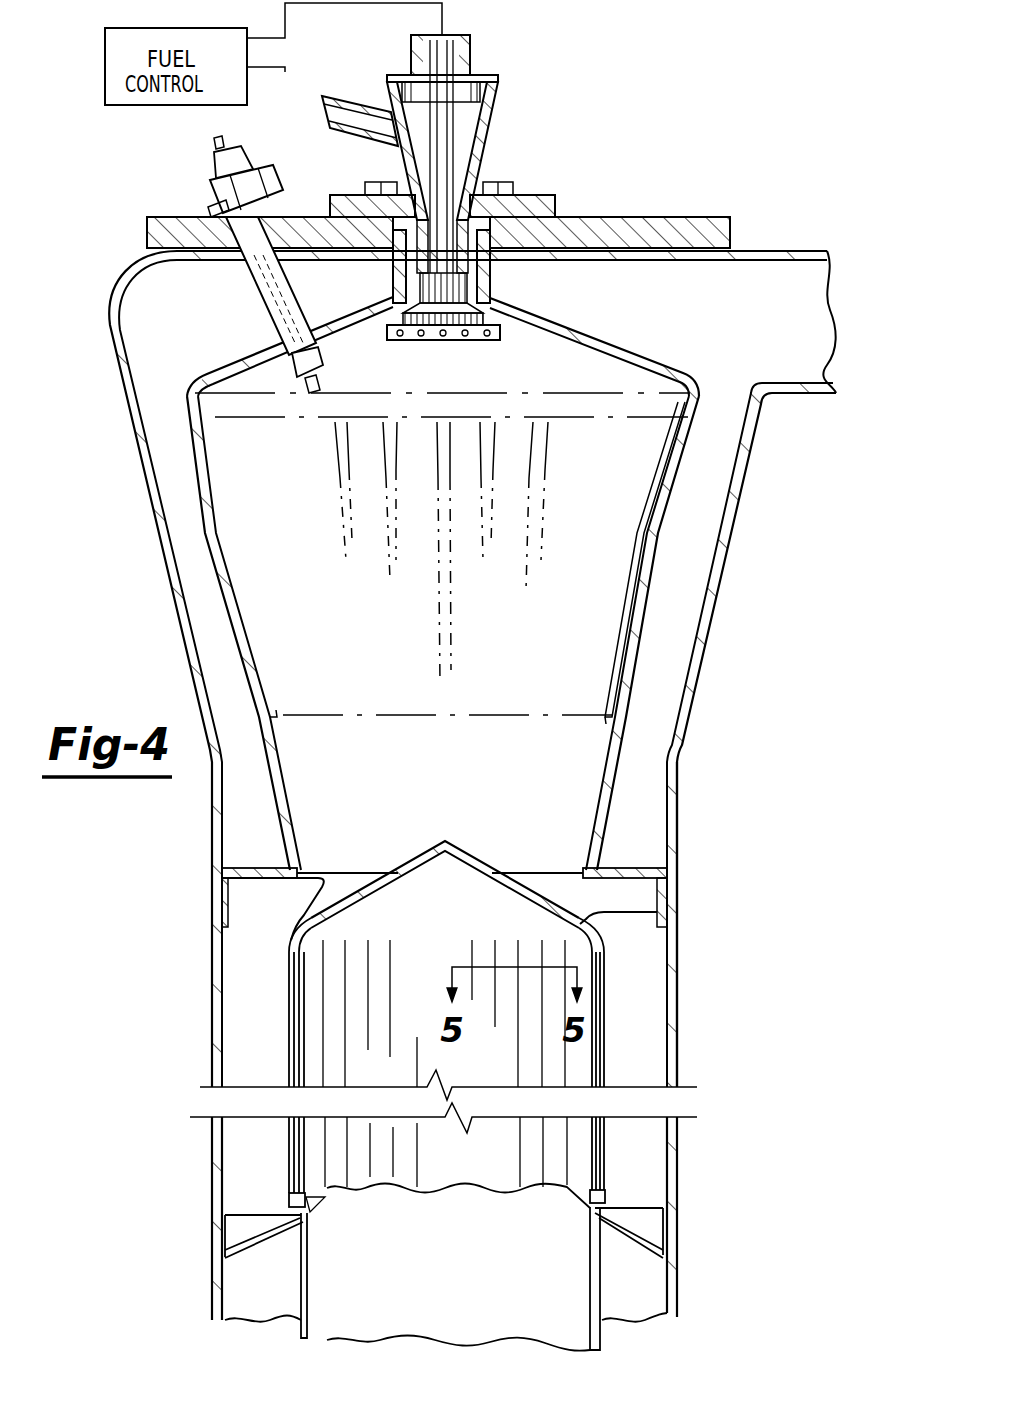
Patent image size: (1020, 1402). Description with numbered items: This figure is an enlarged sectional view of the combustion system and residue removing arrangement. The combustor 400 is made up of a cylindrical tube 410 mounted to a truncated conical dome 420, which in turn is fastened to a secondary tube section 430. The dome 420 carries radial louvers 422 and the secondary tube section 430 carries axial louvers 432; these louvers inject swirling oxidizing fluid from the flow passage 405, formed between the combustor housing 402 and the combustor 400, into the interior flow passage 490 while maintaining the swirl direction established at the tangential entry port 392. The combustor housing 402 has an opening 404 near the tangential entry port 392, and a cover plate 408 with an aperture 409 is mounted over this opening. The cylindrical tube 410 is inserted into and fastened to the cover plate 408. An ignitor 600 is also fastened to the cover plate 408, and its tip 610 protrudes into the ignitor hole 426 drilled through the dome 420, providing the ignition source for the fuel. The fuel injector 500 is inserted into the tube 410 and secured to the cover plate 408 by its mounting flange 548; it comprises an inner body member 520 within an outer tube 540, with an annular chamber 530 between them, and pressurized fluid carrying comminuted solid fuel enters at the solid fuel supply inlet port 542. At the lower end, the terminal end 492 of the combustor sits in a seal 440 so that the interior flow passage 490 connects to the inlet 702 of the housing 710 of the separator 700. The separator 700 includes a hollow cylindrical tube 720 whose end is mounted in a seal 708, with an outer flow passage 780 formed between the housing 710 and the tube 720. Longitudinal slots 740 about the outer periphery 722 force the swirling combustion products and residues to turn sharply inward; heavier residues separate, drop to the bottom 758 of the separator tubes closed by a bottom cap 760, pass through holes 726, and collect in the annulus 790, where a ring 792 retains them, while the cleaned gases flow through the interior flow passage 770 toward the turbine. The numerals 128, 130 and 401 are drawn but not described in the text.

The combustion zone 128 is at (510, 1192).
The cover plate 130 is at (670, 912).
The tangential entry port 392 is at (748, 263).
The combustor 400 is at (720, 620).
The mounting flange 401 is at (490, 212).
The combustor housing 402 is at (750, 463).
The opening 404 is at (323, 217).
The flow passage 405 is at (167, 455).
The cover plate 408 is at (162, 218).
The aperture 409 is at (210, 212).
The cylindrical tube 410 is at (490, 287).
The dome 420 is at (645, 362).
The radial louvers 422 is at (245, 356).
The ignitor hole 426 is at (306, 333).
The secondary tube section 430 is at (630, 693).
The axial louvers 432 is at (648, 562).
The seal 440 is at (268, 868).
The interior flow passage 490 is at (565, 789).
The terminal end 492 is at (555, 827).
The fuel injector 500 is at (497, 88).
The inner body member 520 is at (445, 133).
The annular chamber 530 is at (467, 150).
The outer tube 540 is at (483, 173).
The solid fuel supply inlet port 542 is at (345, 108).
The mounting flange 548 is at (345, 196).
The ignitor 600 is at (222, 140).
The tip 610 is at (318, 386).
The separator 700 is at (683, 1028).
The inlet 702 is at (327, 878).
The seal 708 is at (308, 1232).
The housing 710 is at (677, 993).
The hollow cylindrical tube 720 is at (604, 1077).
The outer periphery 722 is at (606, 1143).
The holes 726 is at (604, 1200).
The longitudinal slots 740 is at (604, 1172).
The bottom 758 is at (647, 1255).
The bottom cap 760 is at (310, 1200).
The interior flow passage 770 is at (497, 1173).
The outer flow passage 780 is at (237, 1030).
The annulus 790 is at (643, 1304).
The ring 792 is at (250, 1237).